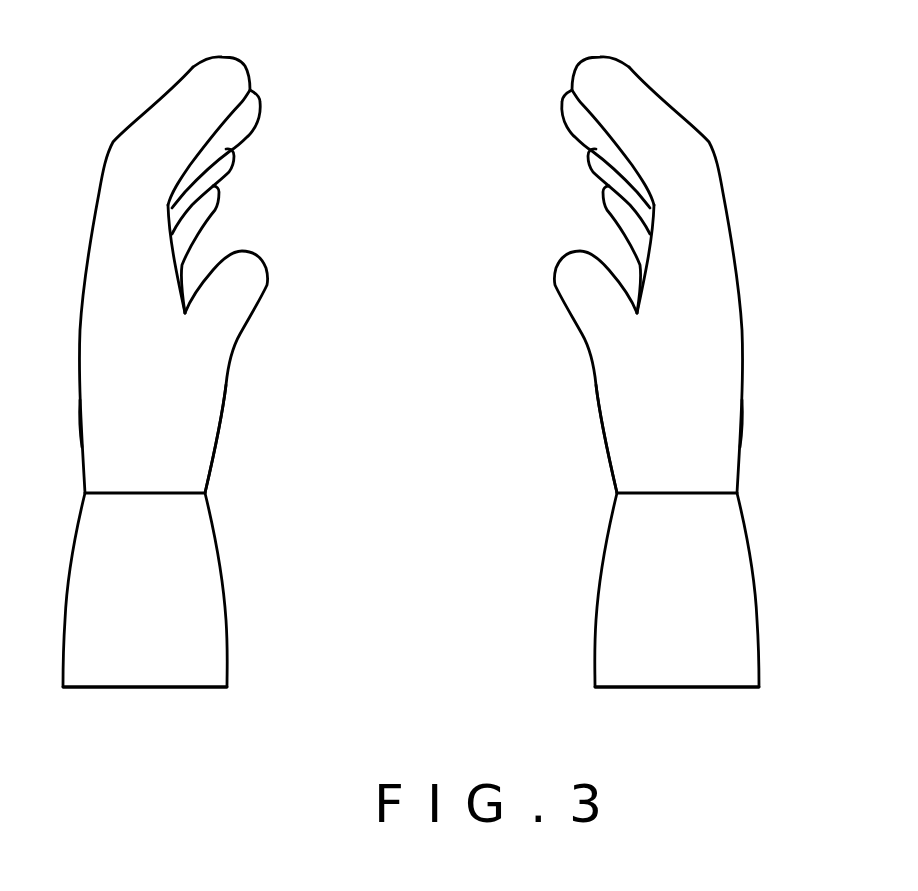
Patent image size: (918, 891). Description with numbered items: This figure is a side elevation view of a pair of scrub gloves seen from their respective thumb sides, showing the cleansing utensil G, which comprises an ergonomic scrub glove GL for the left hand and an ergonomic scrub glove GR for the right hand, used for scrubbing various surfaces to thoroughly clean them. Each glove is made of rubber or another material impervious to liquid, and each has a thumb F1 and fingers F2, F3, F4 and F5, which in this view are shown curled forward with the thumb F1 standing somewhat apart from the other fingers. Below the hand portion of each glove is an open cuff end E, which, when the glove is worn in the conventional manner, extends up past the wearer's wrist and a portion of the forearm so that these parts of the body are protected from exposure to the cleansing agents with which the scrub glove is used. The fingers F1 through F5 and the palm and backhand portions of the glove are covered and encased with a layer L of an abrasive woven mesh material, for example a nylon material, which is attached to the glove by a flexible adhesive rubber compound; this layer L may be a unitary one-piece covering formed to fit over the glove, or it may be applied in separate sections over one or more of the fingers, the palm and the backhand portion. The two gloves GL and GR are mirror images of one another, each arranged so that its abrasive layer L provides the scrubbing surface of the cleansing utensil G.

The thumb F1 is at (268, 278).
The finger F2 is at (218, 57).
The finger F3 is at (260, 102).
The finger F4 is at (235, 162).
The finger F5 is at (218, 200).
The cleansing utensil G is at (151, 623).
The cuff end E is at (190, 690).
The layer L is at (66, 442).
The scrub glove GL is at (256, 425).
The scrub glove GR is at (560, 455).